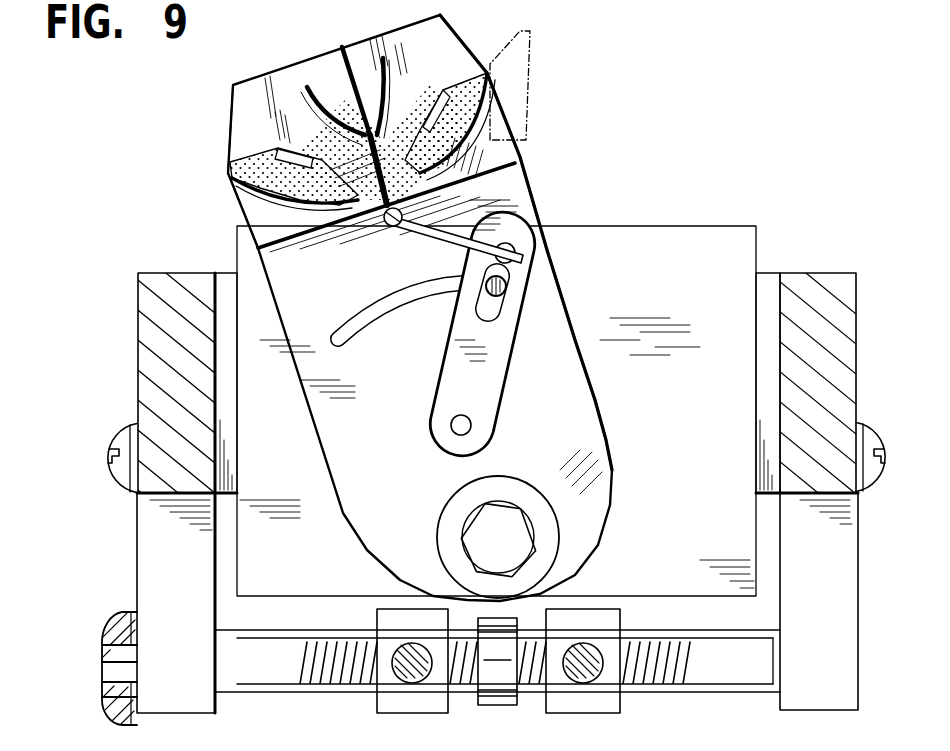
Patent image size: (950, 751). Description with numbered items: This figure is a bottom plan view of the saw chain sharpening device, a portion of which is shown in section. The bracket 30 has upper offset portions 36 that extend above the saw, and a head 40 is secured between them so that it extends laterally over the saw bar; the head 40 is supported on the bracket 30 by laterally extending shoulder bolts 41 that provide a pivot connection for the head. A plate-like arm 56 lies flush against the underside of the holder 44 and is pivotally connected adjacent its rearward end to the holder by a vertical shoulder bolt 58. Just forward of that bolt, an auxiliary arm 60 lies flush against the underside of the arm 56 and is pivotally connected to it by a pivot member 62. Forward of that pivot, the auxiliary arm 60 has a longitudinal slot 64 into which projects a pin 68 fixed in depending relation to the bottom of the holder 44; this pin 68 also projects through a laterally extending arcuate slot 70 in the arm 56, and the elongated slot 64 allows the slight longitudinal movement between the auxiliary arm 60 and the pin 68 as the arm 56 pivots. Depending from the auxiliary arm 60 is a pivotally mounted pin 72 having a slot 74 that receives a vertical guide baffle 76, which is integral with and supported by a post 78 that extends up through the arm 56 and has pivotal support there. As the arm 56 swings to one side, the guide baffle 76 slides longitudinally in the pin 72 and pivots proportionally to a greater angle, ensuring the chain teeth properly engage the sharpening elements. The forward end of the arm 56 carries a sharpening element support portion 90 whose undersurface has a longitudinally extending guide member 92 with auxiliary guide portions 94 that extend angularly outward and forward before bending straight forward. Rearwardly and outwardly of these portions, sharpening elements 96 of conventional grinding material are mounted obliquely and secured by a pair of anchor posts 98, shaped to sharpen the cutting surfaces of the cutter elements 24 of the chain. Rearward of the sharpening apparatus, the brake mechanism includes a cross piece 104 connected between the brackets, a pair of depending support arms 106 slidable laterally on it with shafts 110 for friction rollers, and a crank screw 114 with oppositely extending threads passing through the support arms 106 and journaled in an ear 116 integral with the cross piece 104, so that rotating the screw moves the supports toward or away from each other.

The cutter element 24 is at (530, 78).
The bracket 30 is at (180, 404).
The upper offset portions 36 is at (165, 292).
The head 40 is at (222, 283).
The shoulder bolts 41 is at (115, 440).
The holder 44 is at (677, 241).
The plate-like arm 56 is at (402, 563).
The vertical shoulder bolt 58 is at (512, 550).
The auxiliary arm 60 is at (518, 310).
The pivot member 62 is at (472, 425).
The longitudinal slot 64 is at (507, 312).
The pin 68 is at (513, 278).
The arcuate slot 70 is at (373, 321).
The pin 72 is at (510, 247).
The slot 74 is at (514, 233).
The guide baffle 76 is at (474, 228).
The post 78 is at (400, 226).
The sharpening element support portion 90 is at (246, 107).
The guide member 92 is at (381, 218).
The auxiliary guide portions 94 is at (311, 85).
The sharpening elements 96 is at (490, 75).
The anchor posts 98 is at (440, 97).
The cross piece 104 is at (497, 686).
The support arms 106 is at (534, 673).
The shafts 110 is at (594, 657).
The crank screw 114 is at (297, 677).
The ear 116 is at (497, 706).